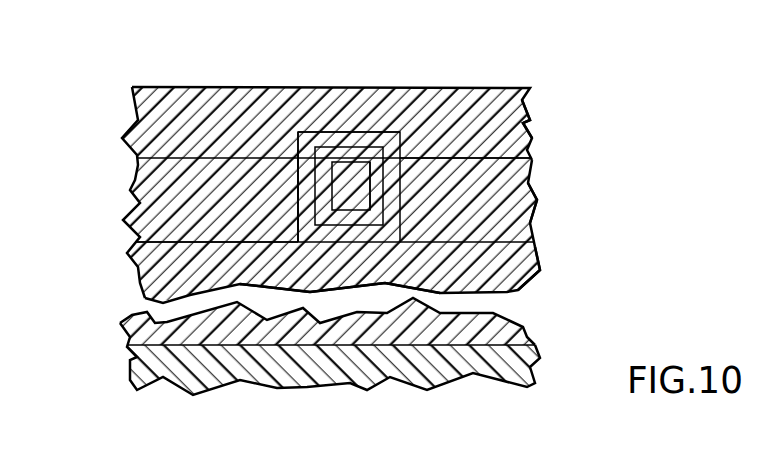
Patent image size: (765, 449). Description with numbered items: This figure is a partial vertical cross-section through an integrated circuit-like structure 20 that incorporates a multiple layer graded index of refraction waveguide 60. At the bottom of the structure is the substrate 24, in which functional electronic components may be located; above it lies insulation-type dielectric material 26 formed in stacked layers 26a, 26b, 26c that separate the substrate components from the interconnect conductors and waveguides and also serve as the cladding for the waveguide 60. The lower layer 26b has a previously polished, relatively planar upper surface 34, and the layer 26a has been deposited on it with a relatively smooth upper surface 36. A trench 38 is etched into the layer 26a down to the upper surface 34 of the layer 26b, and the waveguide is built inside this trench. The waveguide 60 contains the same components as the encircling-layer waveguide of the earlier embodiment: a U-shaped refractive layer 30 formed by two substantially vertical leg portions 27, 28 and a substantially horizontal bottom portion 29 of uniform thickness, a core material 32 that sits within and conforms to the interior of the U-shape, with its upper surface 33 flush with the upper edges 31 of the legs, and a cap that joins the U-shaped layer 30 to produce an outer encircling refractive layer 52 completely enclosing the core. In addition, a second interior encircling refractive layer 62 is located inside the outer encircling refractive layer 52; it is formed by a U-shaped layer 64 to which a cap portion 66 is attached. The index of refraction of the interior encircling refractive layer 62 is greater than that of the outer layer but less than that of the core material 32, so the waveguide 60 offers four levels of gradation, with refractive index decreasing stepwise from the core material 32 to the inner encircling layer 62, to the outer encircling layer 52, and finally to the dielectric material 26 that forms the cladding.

The integrated circuit-like structure 20 is at (510, 46).
The substrate 24 is at (134, 347).
The dielectric material 26 is at (126, 121).
The dielectric layer 26a is at (516, 225).
The lower dielectric layer 26b is at (532, 270).
The dielectric layer 26c is at (526, 95).
The leg portion 27 is at (300, 177).
The leg portion 28 is at (408, 178).
The bottom portion 29 is at (357, 235).
The U-shaped refractive layer 30 is at (333, 238).
The upper edges 31 is at (315, 146).
The core material 32 is at (300, 150).
The upper surface 33 is at (365, 161).
The upper surface 34 is at (180, 234).
The upper surface 36 is at (444, 158).
The trench 38 is at (318, 250).
The outer encircling refractive layer 52 is at (520, 118).
The multiple layer graded index of refraction waveguide 60 is at (287, 201).
The interior encircling refractive layer 62 is at (399, 217).
The U-shaped layer 64 is at (298, 166).
The cap portion 66 is at (367, 158).